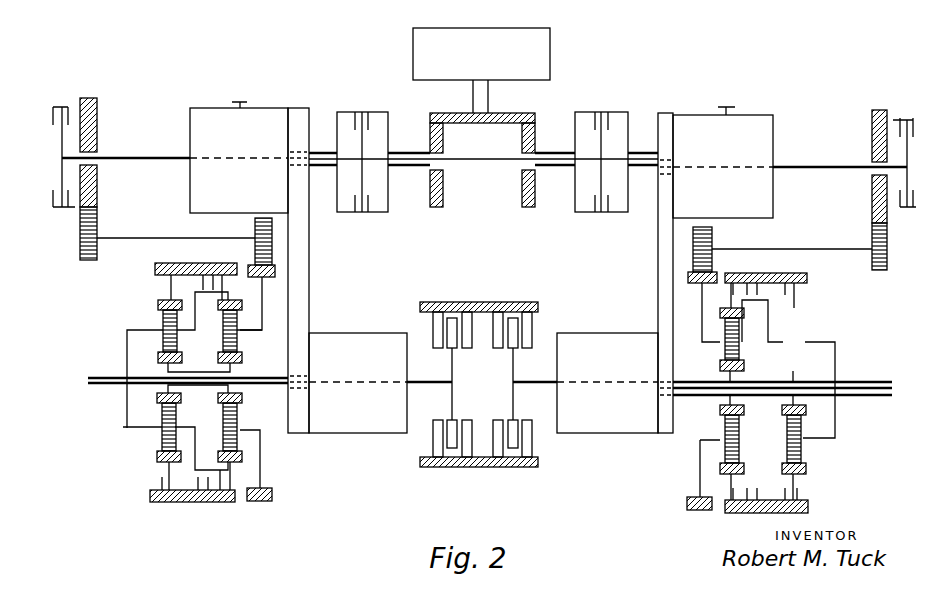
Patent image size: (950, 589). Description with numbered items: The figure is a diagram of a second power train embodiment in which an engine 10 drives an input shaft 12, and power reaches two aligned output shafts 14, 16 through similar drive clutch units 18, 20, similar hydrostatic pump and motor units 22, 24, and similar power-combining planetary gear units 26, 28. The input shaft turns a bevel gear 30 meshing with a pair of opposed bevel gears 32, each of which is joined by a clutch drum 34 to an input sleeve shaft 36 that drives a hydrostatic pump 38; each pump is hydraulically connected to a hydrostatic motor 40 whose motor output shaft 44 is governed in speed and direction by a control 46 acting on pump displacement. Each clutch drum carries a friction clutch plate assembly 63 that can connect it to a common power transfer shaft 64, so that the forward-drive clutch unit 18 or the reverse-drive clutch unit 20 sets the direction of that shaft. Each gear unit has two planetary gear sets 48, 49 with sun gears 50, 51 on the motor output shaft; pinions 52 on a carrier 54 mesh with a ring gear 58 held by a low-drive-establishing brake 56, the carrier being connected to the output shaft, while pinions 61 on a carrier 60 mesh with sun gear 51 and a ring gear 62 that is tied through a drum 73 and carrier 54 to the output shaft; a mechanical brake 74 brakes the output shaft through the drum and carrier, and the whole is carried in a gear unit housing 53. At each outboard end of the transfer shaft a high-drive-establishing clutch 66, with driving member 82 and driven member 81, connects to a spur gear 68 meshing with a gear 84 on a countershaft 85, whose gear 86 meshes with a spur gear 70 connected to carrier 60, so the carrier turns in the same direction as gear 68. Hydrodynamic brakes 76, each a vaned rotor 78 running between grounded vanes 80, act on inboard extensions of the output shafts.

The engine 10 is at (550, 40).
The input shaft 12 is at (490, 96).
The output shaft 14 is at (892, 388).
The output shaft 16 is at (100, 380).
The forward-drive clutch unit 18 is at (386, 112).
The reverse-drive clutch unit 20 is at (614, 112).
The hydrostatic pump and motor unit 22 is at (770, 115).
The hydrostatic pump and motor unit 24 is at (493, 140).
The power-combining planetary gear unit 26 is at (800, 513).
The power-combining planetary gear unit 28 is at (190, 503).
The bevel gear 30 is at (450, 113).
The bevel gear 32 is at (440, 200).
The clutch drum 34 is at (362, 212).
The input sleeve shaft 36 is at (320, 168).
The hydrostatic pump 38 is at (190, 128).
The hydrostatic motor 40 is at (345, 333).
The motor output shaft 44 is at (300, 390).
The control 46 is at (240, 102).
The planetary gear set 48 is at (157, 440).
The planetary gear set 49 is at (242, 340).
The sun gear 50 is at (158, 358).
The sun gear 51 is at (243, 403).
The planetary pinion 52 is at (160, 320).
The gear unit housing 53 is at (160, 502).
The carrier 54 is at (127, 428).
The low-drive-establishing brake 56 is at (158, 268).
The ring gear 58 is at (155, 458).
The carrier 60 is at (300, 408).
The pinion 61 is at (240, 440).
The ring gear 62 is at (245, 462).
The friction clutch plate assembly 63 is at (360, 115).
The power transfer shaft 64 is at (465, 166).
The high-drive-establishing clutch 66 is at (74, 104).
The spur gear 68 is at (90, 117).
The spur gear 70 is at (272, 495).
The drum 73 is at (480, 324).
The mechanical brake 74 is at (230, 503).
The hydrodynamic brake 76 is at (540, 320).
The vaned rotor 78 is at (490, 302).
The grounded vanes 80 is at (450, 320).
The high-clutch driven member 81 is at (62, 107).
The high-clutch driving member 82 is at (62, 147).
The gear 84 is at (97, 222).
The countershaft 85 is at (175, 238).
The gear 86 is at (255, 222).